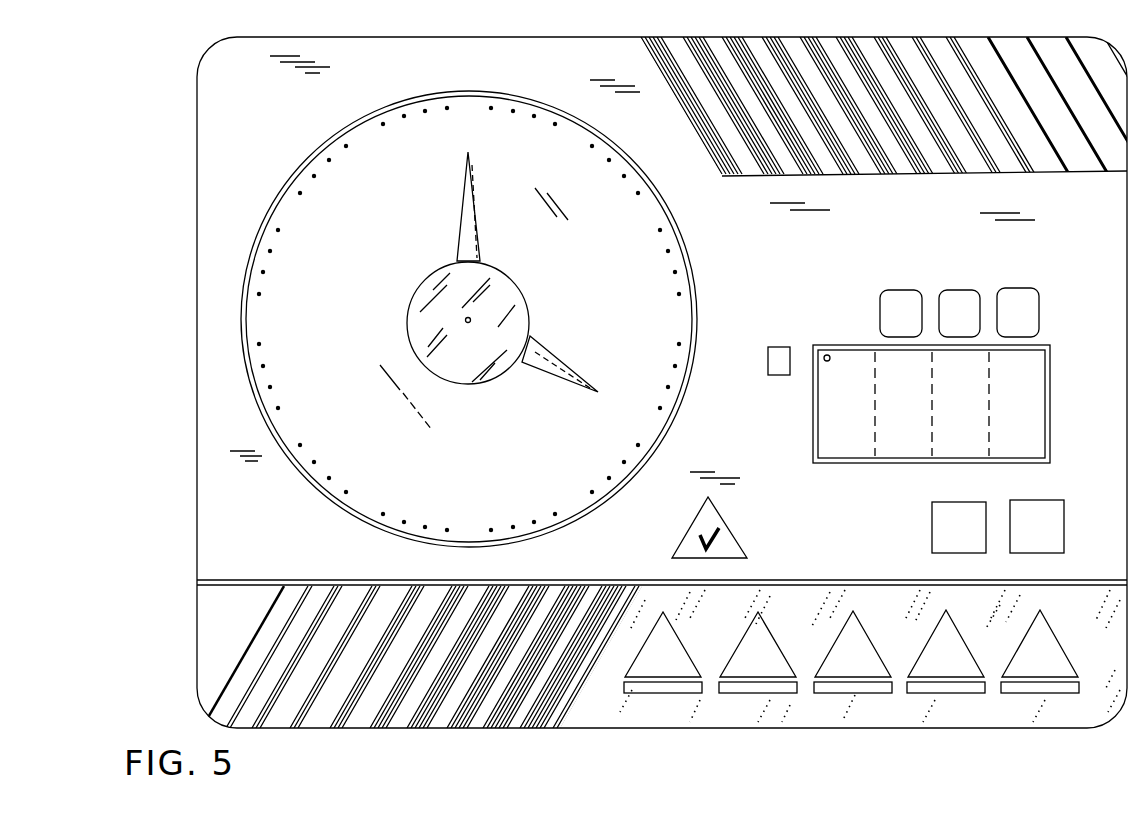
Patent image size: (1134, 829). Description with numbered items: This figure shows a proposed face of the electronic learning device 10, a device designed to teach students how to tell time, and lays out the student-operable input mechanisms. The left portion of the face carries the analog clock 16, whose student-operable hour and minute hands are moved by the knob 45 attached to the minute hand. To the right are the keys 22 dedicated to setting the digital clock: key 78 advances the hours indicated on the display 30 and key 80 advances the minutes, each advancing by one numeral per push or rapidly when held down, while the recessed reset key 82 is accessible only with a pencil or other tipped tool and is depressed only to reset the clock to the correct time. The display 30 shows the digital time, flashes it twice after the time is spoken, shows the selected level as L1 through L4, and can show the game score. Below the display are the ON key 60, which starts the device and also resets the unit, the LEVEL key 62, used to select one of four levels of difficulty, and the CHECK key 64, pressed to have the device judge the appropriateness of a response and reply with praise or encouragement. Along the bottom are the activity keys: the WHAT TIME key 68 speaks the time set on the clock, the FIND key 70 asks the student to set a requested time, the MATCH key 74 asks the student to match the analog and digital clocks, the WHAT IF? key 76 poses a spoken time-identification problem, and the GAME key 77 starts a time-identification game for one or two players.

The electronic learning device 10 is at (766, 271).
The analog clock 16 is at (469, 319).
The keys 22 is at (931, 304).
The display 30 is at (1050, 386).
The knob 45 is at (529, 296).
The ON key 60 is at (1048, 500).
The LEVEL key 62 is at (946, 502).
The CHECK key 64 is at (730, 528).
The WHAT TIME key 68 is at (652, 669).
The FIND key 70 is at (747, 669).
The MATCH key 74 is at (842, 669).
The WHAT IF? key 76 is at (935, 669).
The GAME key 77 is at (1029, 669).
The key 78 is at (893, 290).
The key 80 is at (955, 289).
The recessed reset key 82 is at (1020, 288).